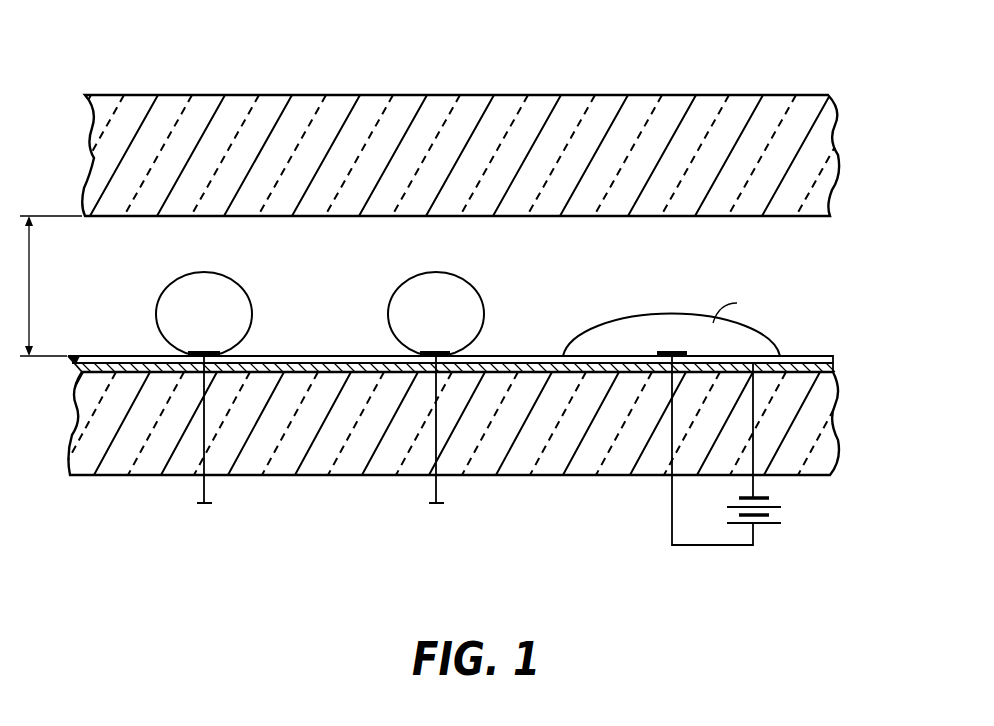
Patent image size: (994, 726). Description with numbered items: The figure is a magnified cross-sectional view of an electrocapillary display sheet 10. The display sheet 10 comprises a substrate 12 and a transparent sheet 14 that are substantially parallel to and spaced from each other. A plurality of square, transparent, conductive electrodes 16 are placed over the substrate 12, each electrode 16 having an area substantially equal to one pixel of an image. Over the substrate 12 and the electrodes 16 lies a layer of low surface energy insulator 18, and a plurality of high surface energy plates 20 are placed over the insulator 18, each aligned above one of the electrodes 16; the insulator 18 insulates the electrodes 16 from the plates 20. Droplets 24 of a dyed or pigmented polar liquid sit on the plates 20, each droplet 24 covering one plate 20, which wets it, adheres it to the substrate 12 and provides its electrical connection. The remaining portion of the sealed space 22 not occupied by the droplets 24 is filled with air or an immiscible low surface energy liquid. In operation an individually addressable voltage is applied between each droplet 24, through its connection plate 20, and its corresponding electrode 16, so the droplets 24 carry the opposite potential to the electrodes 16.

The electrocapillary display sheet 10 is at (168, 72).
The substrate 12 is at (830, 402).
The transparent sheet 14 is at (829, 135).
The electrode 16 is at (602, 374).
The low surface energy insulator 18 is at (828, 356).
The high surface energy plate 20 is at (186, 346).
The sealed space 22 is at (788, 251).
The droplet 24 is at (473, 288).